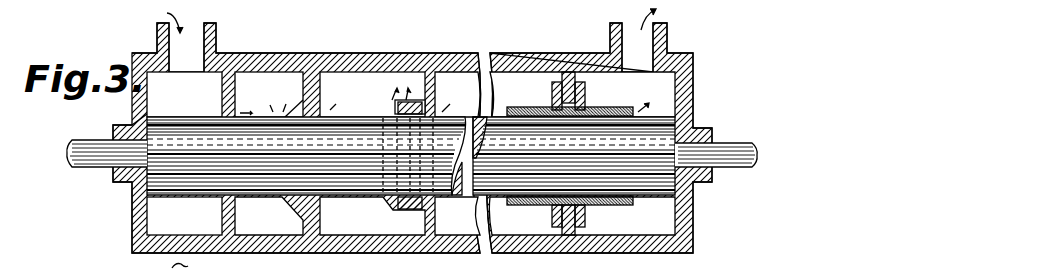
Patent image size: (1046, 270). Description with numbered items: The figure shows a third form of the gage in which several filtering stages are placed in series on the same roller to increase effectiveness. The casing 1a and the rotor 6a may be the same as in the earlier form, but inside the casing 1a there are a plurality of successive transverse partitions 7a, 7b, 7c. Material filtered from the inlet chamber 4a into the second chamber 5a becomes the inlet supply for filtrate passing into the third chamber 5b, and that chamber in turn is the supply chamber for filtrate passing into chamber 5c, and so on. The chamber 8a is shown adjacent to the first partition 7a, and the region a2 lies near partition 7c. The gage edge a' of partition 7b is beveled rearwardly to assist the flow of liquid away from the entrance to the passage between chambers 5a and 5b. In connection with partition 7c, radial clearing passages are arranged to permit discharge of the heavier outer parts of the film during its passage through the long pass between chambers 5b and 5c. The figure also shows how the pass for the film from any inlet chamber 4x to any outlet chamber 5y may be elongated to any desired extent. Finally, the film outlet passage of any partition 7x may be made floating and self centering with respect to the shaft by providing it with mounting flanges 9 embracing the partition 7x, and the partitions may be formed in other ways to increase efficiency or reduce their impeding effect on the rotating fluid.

The casing 1a is at (284, 62).
The inlet chamber 8a is at (219, 106).
The transverse partition 7a is at (228, 92).
The gage edge a' is at (263, 99).
The transverse partition 7b is at (318, 90).
The passage a2 is at (380, 114).
The transverse partition 7c is at (436, 90).
The mounting flanges 9 is at (552, 87).
The partition 7x is at (600, 96).
The rotor 6a is at (412, 156).
The inlet chamber 4a is at (184, 216).
The second chamber 5a is at (269, 216).
The third chamber 5b is at (372, 216).
The chamber 5c is at (457, 216).
The inlet chamber 4x is at (582, 216).
The outlet chamber 5y is at (637, 215).